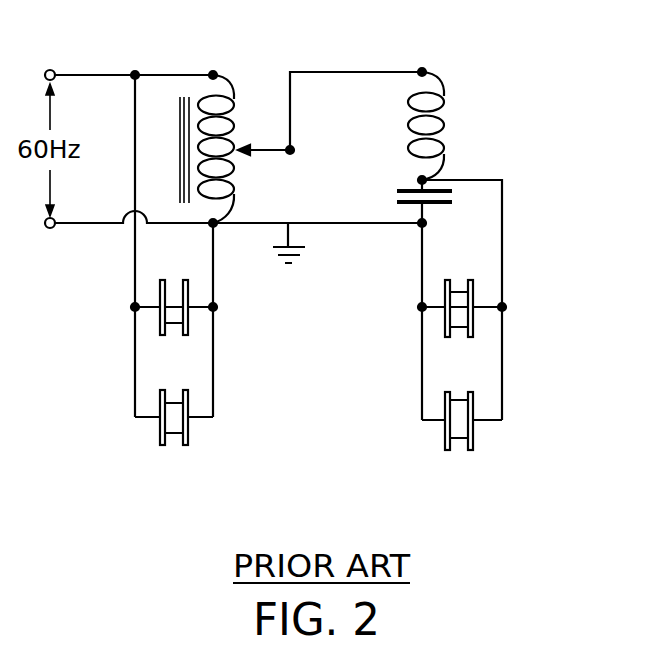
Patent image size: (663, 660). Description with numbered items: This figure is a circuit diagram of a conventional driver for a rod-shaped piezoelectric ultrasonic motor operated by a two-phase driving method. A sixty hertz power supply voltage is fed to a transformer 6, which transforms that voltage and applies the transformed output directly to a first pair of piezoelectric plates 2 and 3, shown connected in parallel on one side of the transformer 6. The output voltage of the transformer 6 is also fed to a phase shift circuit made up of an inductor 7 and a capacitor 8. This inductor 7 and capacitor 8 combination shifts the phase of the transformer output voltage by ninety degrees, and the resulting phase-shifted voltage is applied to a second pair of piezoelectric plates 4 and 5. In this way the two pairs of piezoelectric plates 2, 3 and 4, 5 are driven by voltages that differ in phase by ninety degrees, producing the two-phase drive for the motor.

The piezoelectric plate 2 is at (174, 296).
The piezoelectric plate 3 is at (173, 438).
The piezoelectric plate 4 is at (457, 292).
The piezoelectric plate 5 is at (458, 408).
The transformer 6 is at (240, 107).
The inductor 7 is at (448, 117).
The capacitor 8 is at (452, 197).